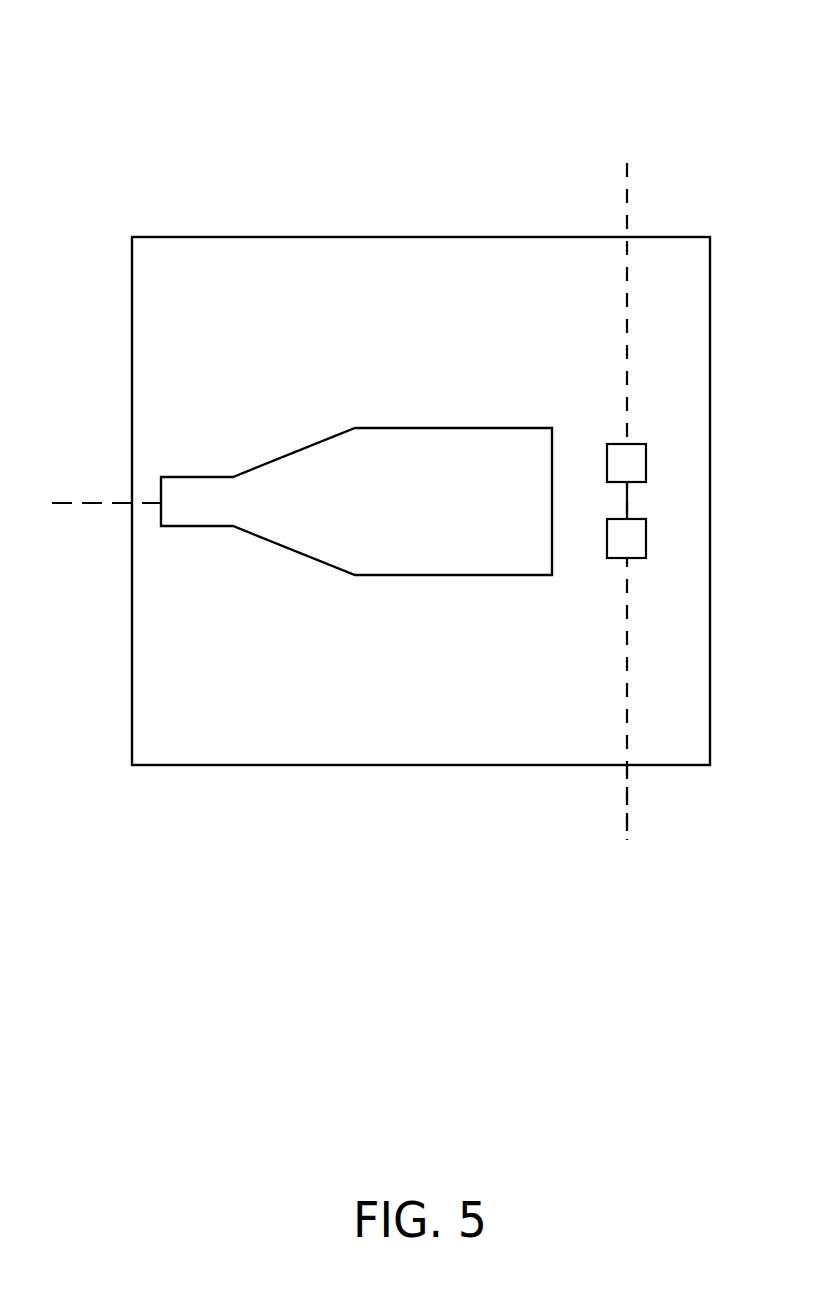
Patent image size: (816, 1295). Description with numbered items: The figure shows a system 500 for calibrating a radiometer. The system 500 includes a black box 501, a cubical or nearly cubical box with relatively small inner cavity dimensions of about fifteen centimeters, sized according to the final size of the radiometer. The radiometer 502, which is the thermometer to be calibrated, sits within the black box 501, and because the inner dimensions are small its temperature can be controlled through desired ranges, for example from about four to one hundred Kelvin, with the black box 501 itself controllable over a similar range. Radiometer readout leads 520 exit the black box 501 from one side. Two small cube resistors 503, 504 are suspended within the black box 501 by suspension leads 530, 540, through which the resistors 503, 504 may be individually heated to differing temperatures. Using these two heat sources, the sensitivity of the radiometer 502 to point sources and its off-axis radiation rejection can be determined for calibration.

The system for calibrating a radiometer 500 is at (571, 62).
The black box 501 is at (345, 237).
The radiometer 502 is at (364, 428).
The suspended resistor 503 is at (607, 444).
The suspended resistor 504 is at (607, 558).
The radiometer readout leads 520 is at (90, 503).
The suspension lead 530 is at (627, 200).
The suspension lead 540 is at (627, 830).